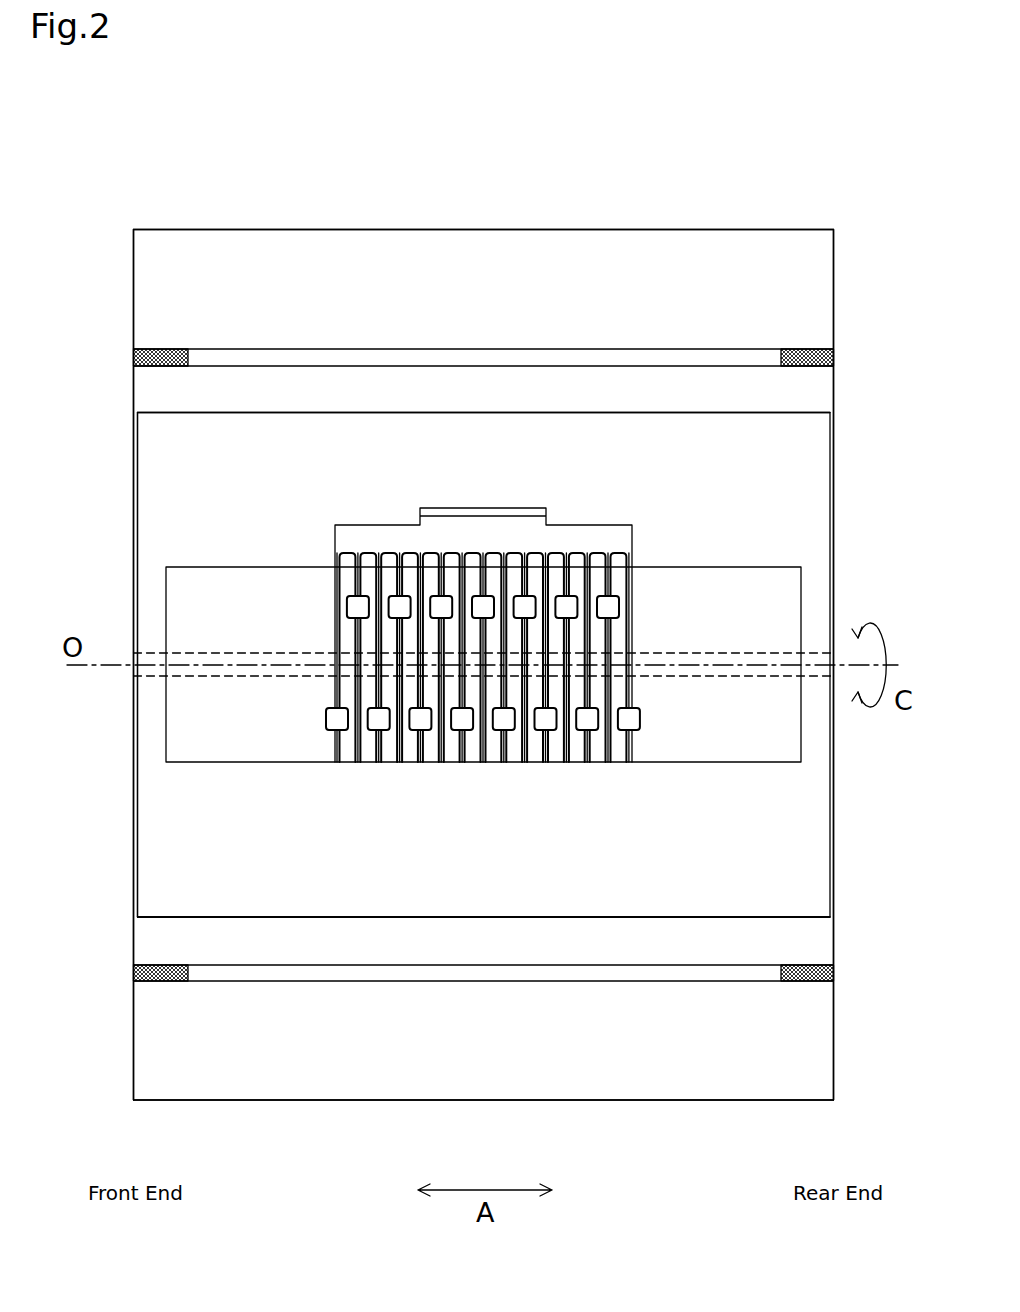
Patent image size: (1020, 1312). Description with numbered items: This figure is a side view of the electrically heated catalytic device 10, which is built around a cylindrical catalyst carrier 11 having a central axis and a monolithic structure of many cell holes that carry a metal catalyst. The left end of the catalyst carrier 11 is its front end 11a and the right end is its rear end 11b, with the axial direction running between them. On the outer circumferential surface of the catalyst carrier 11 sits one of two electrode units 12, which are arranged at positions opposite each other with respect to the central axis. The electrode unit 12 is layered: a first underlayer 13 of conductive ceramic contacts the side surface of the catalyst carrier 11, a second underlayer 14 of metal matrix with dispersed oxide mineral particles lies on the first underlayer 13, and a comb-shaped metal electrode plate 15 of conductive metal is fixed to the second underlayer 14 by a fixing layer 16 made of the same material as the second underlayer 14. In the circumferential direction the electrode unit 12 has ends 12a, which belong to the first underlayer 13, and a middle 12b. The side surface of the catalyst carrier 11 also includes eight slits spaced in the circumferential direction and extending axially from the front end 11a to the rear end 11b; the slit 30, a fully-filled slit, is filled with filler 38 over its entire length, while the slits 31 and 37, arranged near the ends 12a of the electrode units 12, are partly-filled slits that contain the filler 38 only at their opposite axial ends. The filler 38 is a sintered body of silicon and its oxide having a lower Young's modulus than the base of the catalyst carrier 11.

The electrically heated catalytic device 10 is at (120, 199).
The catalyst carrier 11 is at (816, 262).
The front end 11a is at (133, 290).
The rear end 11b is at (833, 297).
The electrode unit 12 is at (816, 472).
The ends of the electrode unit 12a is at (160, 412).
The middle of the electrode unit 12b is at (137, 640).
The first underlayer 13 is at (815, 858).
The second underlayer 14 is at (716, 572).
The metal electrode plate 15 is at (581, 529).
The fixing layer 16 is at (610, 610).
The slit 30 is at (230, 678).
The slit 31 is at (449, 981).
The slit 37 is at (500, 350).
The filler 38 is at (167, 348).